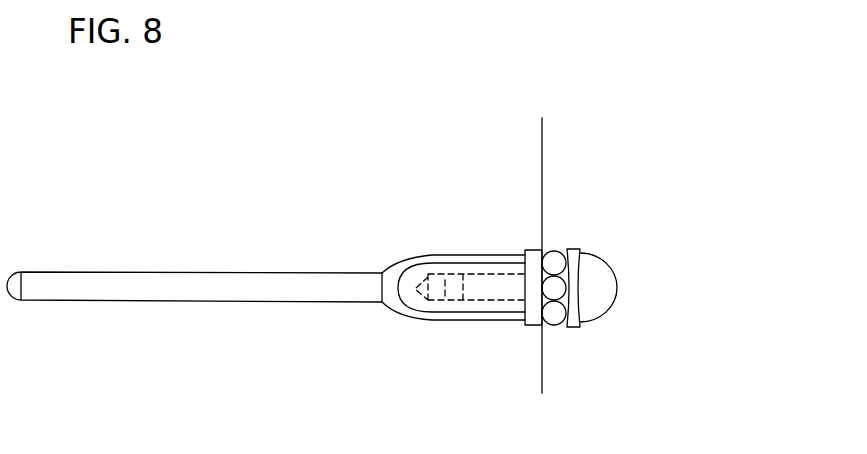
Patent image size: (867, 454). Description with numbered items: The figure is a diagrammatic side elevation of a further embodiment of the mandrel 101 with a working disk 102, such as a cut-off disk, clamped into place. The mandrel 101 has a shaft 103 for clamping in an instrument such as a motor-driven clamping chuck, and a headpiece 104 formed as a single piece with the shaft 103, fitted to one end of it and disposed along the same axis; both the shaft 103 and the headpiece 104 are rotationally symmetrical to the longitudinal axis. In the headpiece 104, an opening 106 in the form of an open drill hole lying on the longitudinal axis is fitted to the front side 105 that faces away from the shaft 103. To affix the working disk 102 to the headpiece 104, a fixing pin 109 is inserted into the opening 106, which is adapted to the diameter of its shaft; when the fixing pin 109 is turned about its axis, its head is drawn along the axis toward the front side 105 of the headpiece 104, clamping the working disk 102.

The mandrel 101 is at (321, 218).
The working disk 102 is at (543, 167).
The shaft 103 is at (267, 293).
The headpiece 104 is at (410, 316).
The front side 105 is at (538, 251).
The opening 106 is at (465, 255).
The fixing pin 109 is at (624, 265).